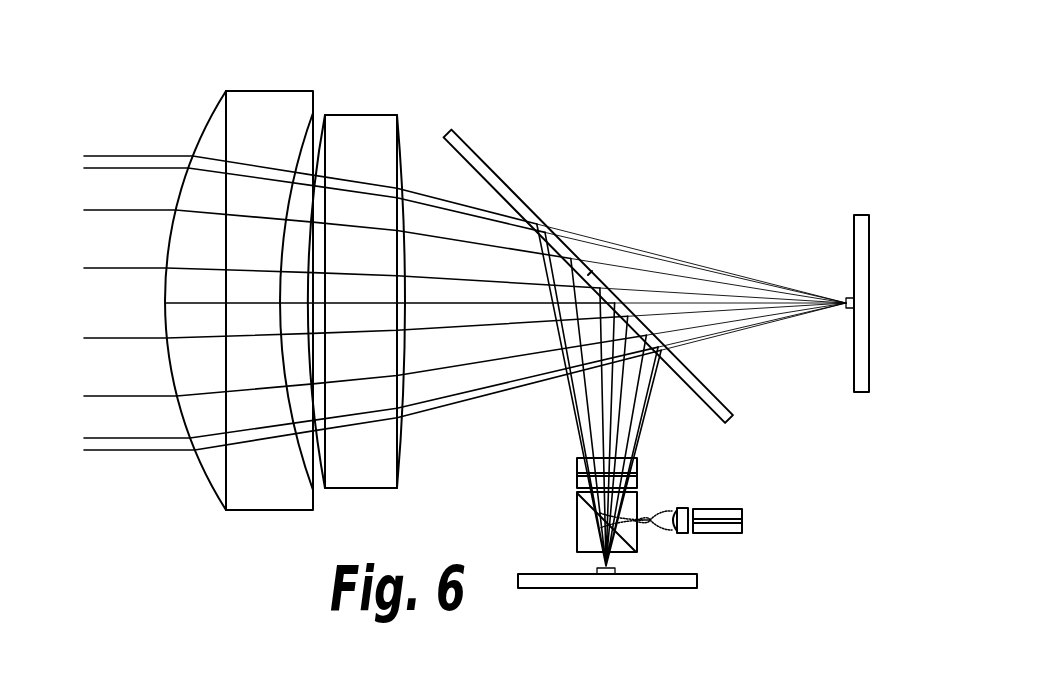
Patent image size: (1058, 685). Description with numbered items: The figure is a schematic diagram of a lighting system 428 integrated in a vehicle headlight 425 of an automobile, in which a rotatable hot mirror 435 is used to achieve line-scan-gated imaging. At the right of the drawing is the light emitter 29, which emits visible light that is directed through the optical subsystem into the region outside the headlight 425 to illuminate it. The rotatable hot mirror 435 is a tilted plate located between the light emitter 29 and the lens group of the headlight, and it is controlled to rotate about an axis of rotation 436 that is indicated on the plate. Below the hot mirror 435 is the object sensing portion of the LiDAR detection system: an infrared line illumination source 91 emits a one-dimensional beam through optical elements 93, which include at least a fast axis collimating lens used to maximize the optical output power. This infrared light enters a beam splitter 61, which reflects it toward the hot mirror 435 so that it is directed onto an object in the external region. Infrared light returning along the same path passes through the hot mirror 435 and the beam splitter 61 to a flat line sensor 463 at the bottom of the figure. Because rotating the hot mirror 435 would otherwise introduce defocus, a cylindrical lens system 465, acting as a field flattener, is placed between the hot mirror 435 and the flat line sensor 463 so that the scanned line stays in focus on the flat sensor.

The vehicle headlight 425 is at (365, 57).
The lighting system 428 is at (482, 92).
The rotatable hot mirror 435 is at (487, 162).
The axis of rotation 436 is at (589, 273).
The light emitter 29 is at (871, 242).
The cylindrical lens system 465 is at (577, 470).
The beam splitter 61 is at (577, 528).
The optical elements 93 is at (679, 507).
The line illumination source 91 is at (741, 508).
The flat line sensor 463 is at (697, 582).